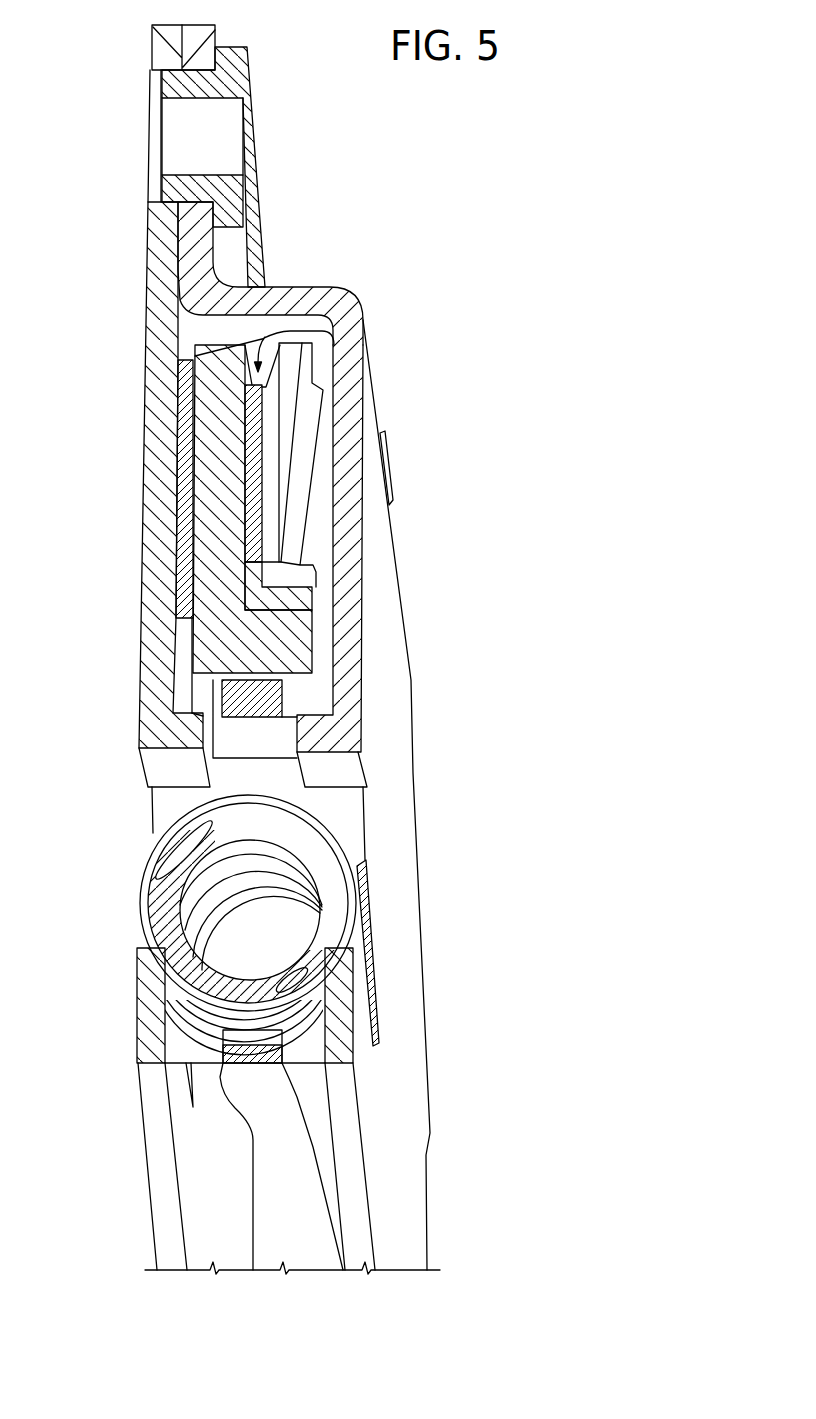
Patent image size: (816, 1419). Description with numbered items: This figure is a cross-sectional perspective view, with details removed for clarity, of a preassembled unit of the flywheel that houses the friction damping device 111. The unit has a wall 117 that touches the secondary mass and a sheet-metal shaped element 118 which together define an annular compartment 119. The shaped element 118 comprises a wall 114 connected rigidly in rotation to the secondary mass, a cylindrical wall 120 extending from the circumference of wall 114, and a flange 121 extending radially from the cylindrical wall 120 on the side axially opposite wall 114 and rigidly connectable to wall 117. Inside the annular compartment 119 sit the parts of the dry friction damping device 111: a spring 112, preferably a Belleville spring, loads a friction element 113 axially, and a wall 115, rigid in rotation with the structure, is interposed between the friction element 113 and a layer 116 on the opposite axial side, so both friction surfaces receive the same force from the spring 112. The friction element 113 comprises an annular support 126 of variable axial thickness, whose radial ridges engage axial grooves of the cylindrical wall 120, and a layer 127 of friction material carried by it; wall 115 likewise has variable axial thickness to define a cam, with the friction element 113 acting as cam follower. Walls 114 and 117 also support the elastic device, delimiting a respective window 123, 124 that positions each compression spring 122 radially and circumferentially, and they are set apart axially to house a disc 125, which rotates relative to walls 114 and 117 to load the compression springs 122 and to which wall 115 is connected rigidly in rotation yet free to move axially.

The friction damping device 111 is at (293, 436).
The spring 112 is at (312, 398).
The friction element 113 is at (363, 323).
The wall 114 is at (350, 580).
The wall 115 is at (223, 577).
The layer 116 is at (183, 520).
The wall 117 is at (158, 440).
The shaped element 118 is at (336, 279).
The annular compartment 119 is at (190, 334).
The cylindrical wall 120 is at (287, 295).
The flange 121 is at (203, 232).
The compression spring 122 is at (152, 918).
The window 123 is at (338, 770).
The window 124 is at (178, 766).
The disc 125 is at (238, 748).
The annular support 126 is at (270, 477).
The layer of friction material 127 is at (250, 532).